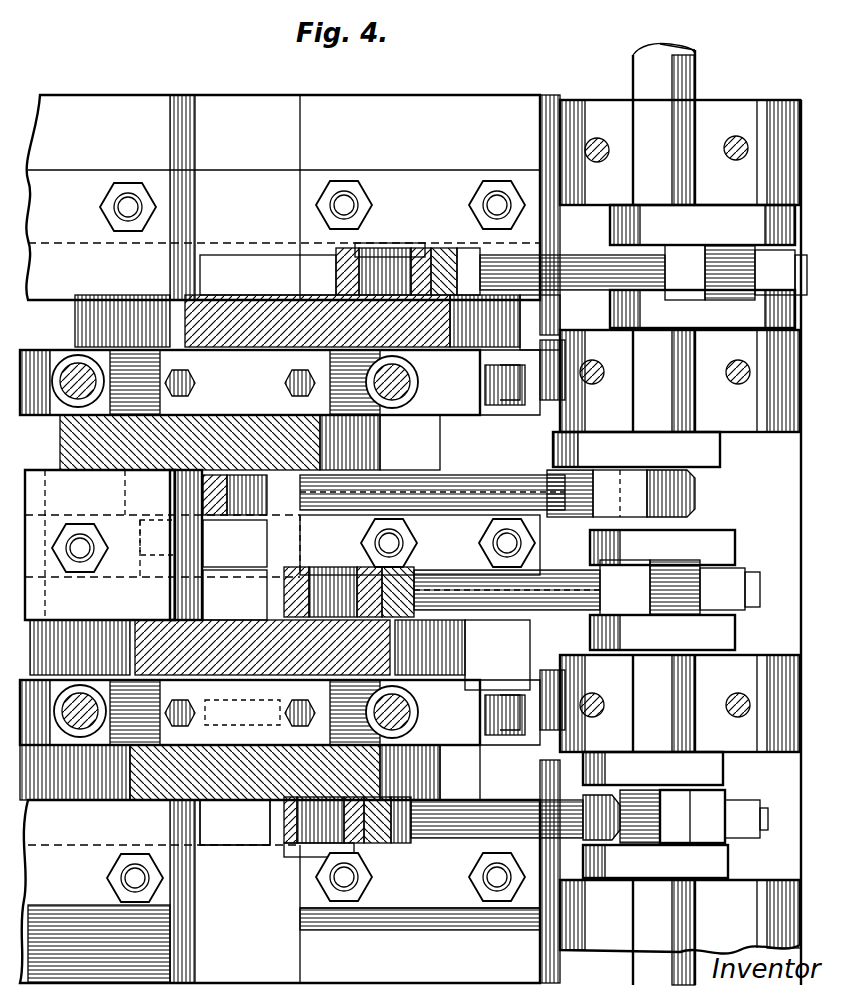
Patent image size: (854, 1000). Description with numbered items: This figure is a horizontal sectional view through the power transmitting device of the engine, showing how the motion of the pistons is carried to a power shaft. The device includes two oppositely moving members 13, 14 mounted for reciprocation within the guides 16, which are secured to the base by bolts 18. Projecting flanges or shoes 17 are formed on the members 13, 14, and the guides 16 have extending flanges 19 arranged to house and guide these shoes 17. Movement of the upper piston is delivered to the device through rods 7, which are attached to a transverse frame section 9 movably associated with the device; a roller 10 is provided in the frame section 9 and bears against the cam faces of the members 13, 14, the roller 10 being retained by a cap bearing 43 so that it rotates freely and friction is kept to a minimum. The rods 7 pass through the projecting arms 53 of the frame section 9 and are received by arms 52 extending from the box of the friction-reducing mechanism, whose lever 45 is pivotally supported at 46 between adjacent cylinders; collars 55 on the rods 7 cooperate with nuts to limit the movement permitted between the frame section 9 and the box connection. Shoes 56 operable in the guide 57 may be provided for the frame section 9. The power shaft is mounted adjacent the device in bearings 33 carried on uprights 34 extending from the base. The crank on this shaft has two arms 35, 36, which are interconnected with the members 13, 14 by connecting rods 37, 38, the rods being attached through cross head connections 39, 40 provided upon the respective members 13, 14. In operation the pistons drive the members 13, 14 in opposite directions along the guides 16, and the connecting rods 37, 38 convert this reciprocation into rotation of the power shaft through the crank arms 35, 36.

The rods 7 is at (95, 358).
The transverse frame section 9 is at (195, 300).
The roller 10 is at (235, 822).
The oppositely moving member 13 is at (220, 607).
The oppositely moving member 14 is at (545, 215).
The guides 16 is at (190, 197).
The projecting flanges or shoes 17 is at (85, 268).
The bolts 18 is at (100, 193).
The extending flanges 19 is at (180, 265).
The bearings 33 is at (590, 970).
The uprights 34 is at (785, 100).
The crank arm 35 is at (700, 518).
The crank arm 36 is at (692, 427).
The connecting rod 37 is at (441, 656).
The connecting rod 38 is at (565, 470).
The cross head connection 39 is at (657, 656).
The cross head connection 40 is at (703, 430).
The cap bearing 43 is at (250, 575).
The lever 45 is at (235, 543).
The pivot 46 is at (150, 519).
The arms 52 is at (317, 322).
The projecting arms 53 is at (70, 358).
The collars 55 is at (247, 647).
The shoes 56 is at (450, 420).
The guide 57 is at (505, 418).